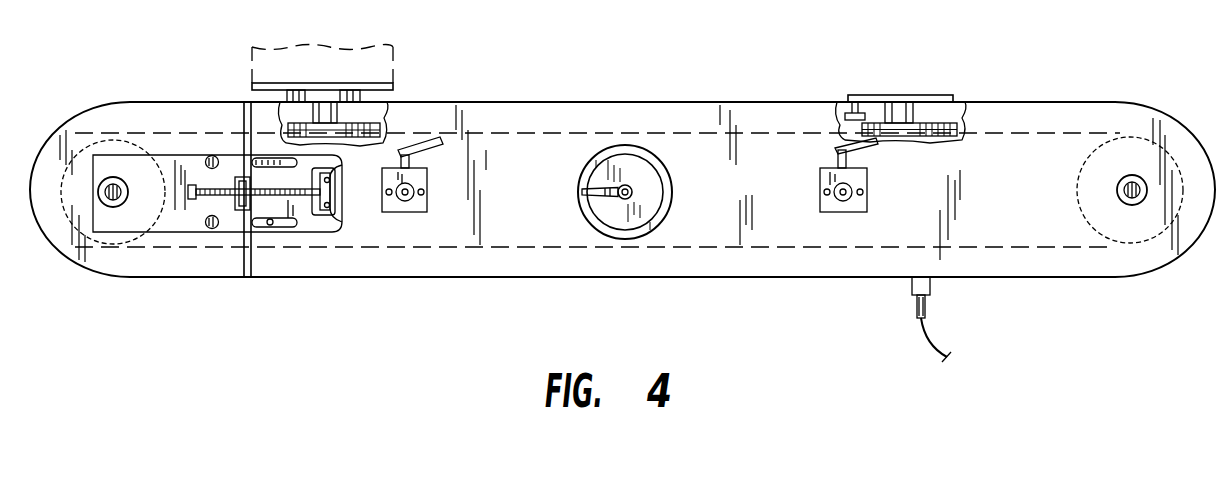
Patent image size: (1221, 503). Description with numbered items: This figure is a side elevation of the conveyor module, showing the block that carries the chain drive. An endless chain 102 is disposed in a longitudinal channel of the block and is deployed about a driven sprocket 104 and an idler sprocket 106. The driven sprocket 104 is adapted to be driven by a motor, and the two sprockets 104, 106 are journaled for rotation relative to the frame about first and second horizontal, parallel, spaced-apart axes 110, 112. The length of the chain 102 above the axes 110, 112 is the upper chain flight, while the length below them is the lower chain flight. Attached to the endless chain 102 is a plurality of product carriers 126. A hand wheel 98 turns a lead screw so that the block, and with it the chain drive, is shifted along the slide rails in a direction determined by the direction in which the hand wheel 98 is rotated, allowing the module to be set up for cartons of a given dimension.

The hand wheel 98 is at (592, 218).
The endless chain 102 is at (577, 130).
The driven sprocket 104 is at (1108, 148).
The idler sprocket 106 is at (97, 140).
The first horizontal axis 110 is at (1125, 200).
The second horizontal axis 112 is at (118, 200).
The product carrier 126 is at (350, 78).